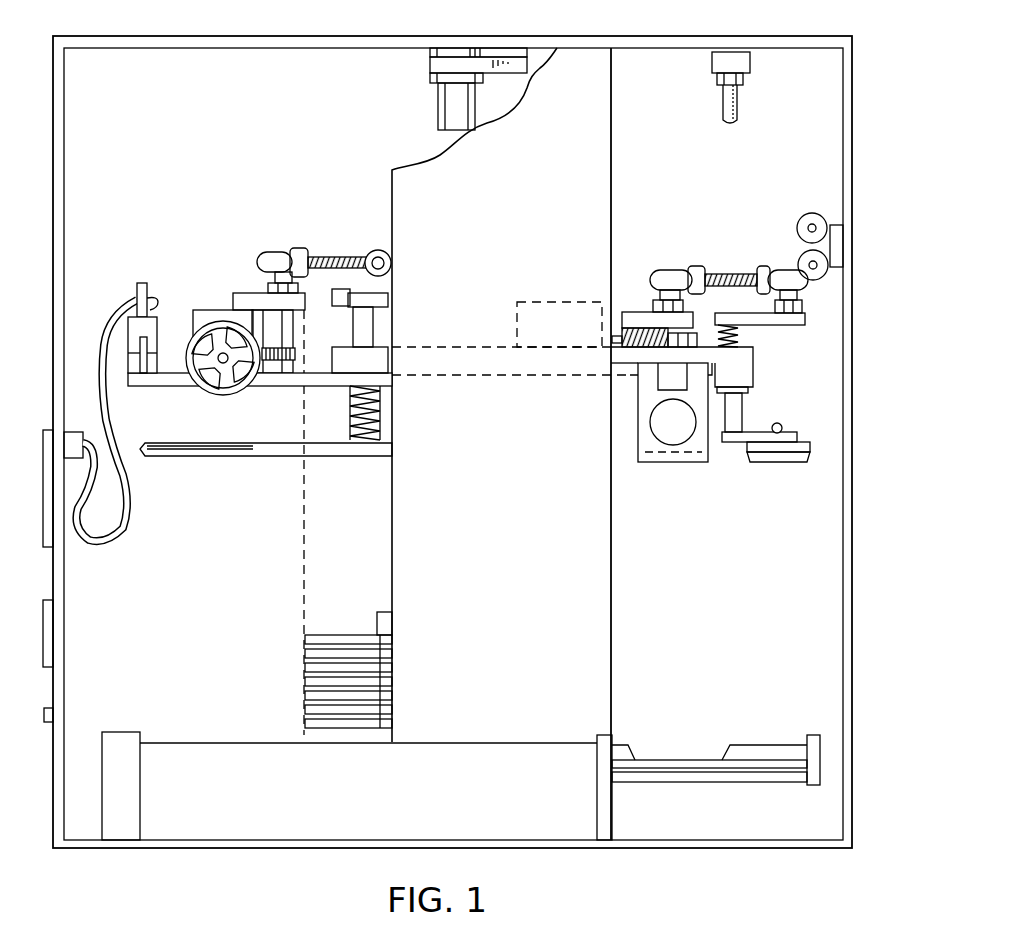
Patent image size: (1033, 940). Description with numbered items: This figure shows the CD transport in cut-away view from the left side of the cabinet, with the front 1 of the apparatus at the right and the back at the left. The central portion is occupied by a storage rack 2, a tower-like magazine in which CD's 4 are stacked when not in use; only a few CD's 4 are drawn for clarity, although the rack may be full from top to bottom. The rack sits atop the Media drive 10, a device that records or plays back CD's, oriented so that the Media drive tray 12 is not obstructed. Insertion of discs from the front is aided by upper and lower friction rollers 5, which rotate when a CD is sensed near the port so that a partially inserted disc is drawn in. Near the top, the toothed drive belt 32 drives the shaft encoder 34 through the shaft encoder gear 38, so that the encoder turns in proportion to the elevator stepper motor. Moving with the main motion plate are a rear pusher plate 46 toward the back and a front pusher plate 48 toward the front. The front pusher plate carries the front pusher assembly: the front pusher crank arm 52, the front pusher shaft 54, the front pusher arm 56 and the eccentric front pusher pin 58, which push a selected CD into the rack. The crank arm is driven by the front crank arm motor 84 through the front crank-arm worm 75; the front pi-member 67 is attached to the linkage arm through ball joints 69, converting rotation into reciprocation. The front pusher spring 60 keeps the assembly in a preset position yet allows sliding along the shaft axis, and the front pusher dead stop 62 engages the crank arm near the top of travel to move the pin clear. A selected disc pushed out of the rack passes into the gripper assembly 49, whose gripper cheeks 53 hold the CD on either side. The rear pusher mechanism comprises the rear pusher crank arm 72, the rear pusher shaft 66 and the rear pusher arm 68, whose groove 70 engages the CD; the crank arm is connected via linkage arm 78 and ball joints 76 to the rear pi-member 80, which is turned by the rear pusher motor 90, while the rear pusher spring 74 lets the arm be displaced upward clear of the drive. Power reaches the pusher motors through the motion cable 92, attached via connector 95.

The front 1 is at (889, 132).
The storage rack 2 is at (305, 670).
The CD's 4 is at (305, 683).
The friction rollers 5 is at (800, 254).
The Media drive 10 is at (337, 806).
The Media drive tray 12 is at (771, 741).
The toothed drive belt 32 is at (520, 57).
The shaft encoder 34 is at (438, 103).
The shaft encoder gear 38 is at (440, 78).
The rear pusher plate 46 is at (278, 394).
The front pusher plate 48 is at (622, 369).
The gripper assembly 49 is at (675, 477).
The front pusher crank arm 52 is at (815, 307).
The gripper cheeks 53 is at (638, 440).
The front pusher shaft 54 is at (742, 414).
The front pusher arm 56 is at (804, 421).
The front pusher pin 58 is at (796, 470).
The front pusher spring 60 is at (742, 331).
The front pusher dead stop 62 is at (740, 102).
The rear pusher shaft 66 is at (353, 322).
The front pi-member 67 is at (628, 312).
The rear pusher arm 68 is at (235, 457).
The ball joints 69 is at (667, 268).
The groove 70 is at (187, 453).
The rear pusher crank arm 72 is at (380, 294).
The rear pusher spring 74 is at (385, 414).
The front crank-arm worm 75 is at (624, 320).
The rear crank arm ball joint 76 is at (275, 252).
The linkage arm 78 is at (341, 257).
The rear pi-member 80 is at (253, 293).
The front crank arm motor 84 is at (552, 302).
The rear pusher motor 90 is at (203, 386).
The motion cable 92 is at (126, 528).
The connector 95 is at (170, 322).